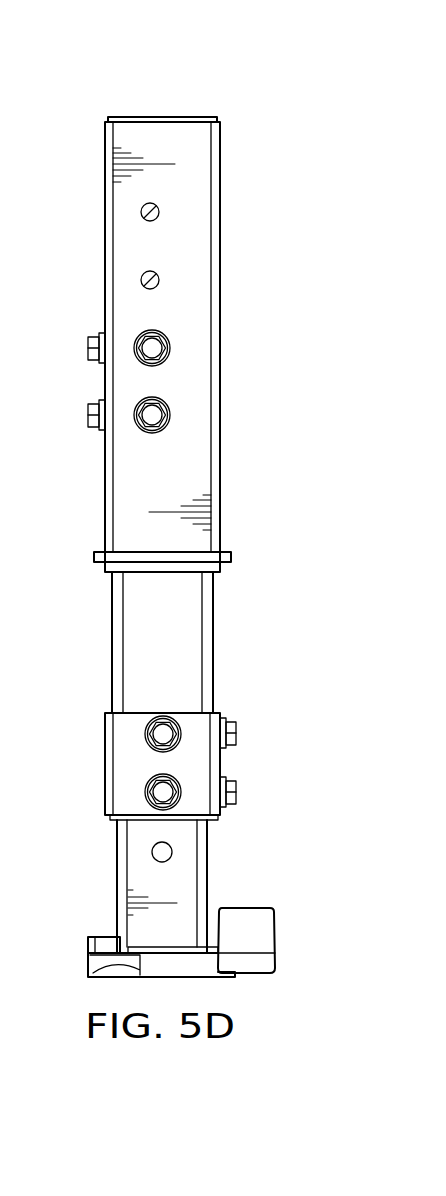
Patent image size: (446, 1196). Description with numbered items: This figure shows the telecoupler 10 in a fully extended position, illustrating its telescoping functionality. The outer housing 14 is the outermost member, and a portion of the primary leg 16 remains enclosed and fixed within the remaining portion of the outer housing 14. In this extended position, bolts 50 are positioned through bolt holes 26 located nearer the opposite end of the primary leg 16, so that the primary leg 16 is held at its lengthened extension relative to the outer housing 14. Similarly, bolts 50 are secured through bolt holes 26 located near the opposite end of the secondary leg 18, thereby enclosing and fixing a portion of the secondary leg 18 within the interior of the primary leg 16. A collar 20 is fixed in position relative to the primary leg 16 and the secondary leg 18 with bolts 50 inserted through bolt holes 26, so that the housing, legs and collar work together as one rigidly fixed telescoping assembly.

The telecoupler 10 is at (252, 72).
The outer housing 14 is at (221, 170).
The primary leg 16 is at (112, 637).
The secondary leg 18 is at (117, 882).
The collar 20 is at (105, 736).
The bolt holes 26 is at (143, 213).
The bolts 50 is at (88, 345).